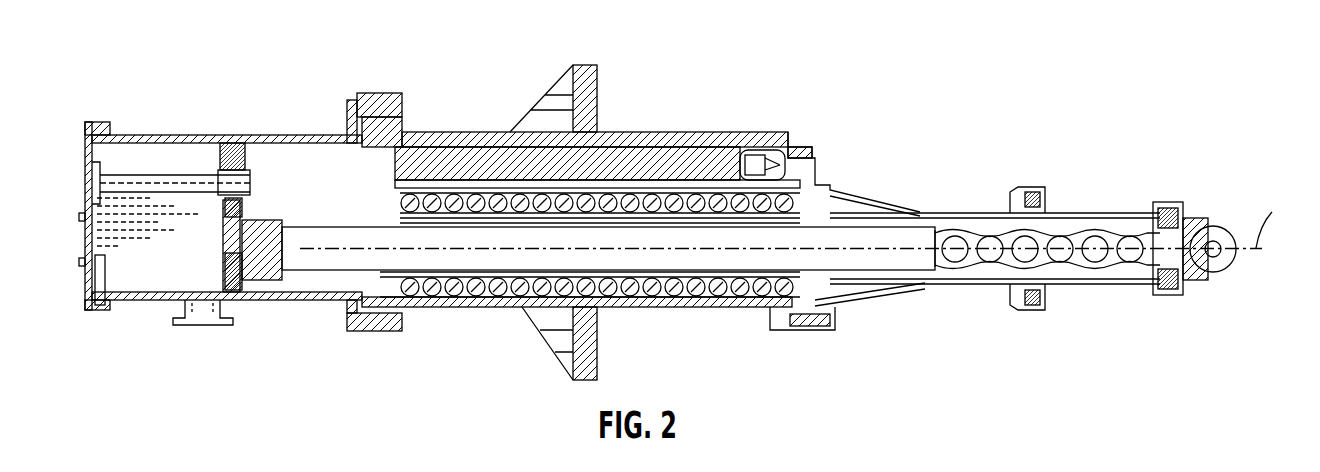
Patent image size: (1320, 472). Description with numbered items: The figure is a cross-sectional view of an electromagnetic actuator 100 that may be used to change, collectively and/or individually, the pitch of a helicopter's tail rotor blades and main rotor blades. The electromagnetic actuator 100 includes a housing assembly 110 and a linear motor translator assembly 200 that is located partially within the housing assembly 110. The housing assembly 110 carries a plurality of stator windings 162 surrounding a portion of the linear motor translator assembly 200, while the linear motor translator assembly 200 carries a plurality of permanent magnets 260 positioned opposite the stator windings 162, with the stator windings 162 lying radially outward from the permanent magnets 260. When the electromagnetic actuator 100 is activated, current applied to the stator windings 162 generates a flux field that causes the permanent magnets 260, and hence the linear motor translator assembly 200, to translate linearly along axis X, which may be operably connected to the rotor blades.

The electromagnetic actuator 100 is at (155, 68).
The housing assembly 110 is at (688, 138).
The stator windings 162 is at (678, 300).
The linear motor translator assembly 200 is at (1082, 208).
The permanent magnets 260 is at (700, 264).